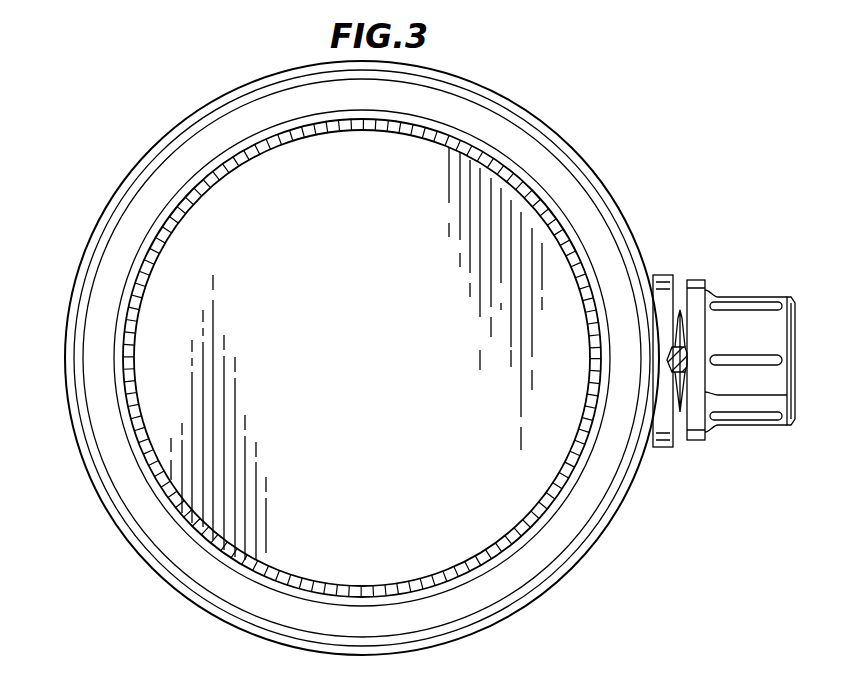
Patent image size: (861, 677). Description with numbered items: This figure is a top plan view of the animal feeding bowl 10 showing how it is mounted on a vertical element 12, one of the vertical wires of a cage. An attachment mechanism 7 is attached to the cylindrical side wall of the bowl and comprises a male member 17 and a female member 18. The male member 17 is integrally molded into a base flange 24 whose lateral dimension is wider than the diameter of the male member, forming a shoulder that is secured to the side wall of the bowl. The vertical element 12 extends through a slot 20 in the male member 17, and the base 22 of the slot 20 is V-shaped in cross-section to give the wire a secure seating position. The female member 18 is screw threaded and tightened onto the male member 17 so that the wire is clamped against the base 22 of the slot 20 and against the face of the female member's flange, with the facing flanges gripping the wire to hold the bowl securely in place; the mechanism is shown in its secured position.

The animal feeding bowl 10 is at (78, 506).
The attachment mechanism 7 is at (745, 439).
The vertical element 12 is at (687, 360).
The male member 17 is at (680, 312).
The female member 18 is at (790, 383).
The slot 20 is at (735, 365).
The base 22 is at (667, 358).
The base flange 24 is at (658, 447).